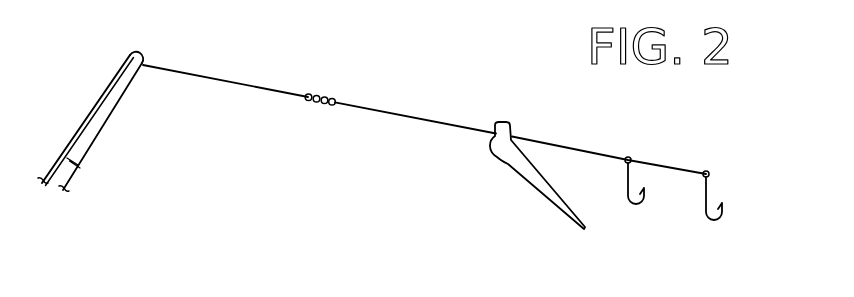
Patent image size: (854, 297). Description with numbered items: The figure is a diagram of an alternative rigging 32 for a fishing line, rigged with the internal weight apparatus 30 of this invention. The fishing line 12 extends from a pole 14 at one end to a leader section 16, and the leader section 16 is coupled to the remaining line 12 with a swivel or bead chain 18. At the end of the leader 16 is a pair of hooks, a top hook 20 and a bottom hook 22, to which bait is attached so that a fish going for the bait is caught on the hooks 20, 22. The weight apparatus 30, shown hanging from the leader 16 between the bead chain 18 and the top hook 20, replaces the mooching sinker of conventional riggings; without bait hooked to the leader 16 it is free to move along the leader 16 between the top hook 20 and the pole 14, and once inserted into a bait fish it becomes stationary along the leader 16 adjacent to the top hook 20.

The fishing line 12 is at (228, 81).
The pole 14 is at (93, 107).
The leader section 16 is at (398, 114).
The swivel or bead chain 18 is at (326, 96).
The top hook 20 is at (641, 205).
The bottom hook 22 is at (718, 222).
The internal weight apparatus 30 is at (530, 187).
The alternative rigging 32 is at (535, 110).